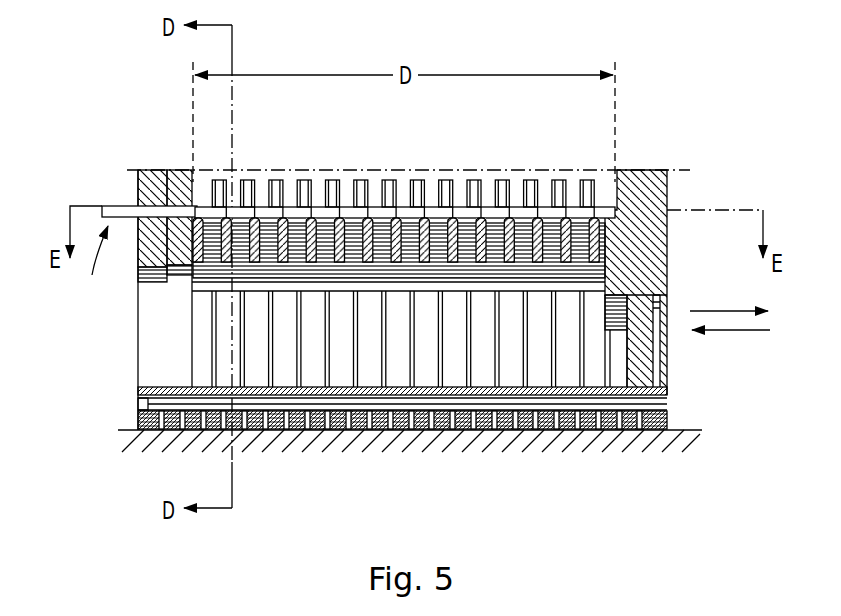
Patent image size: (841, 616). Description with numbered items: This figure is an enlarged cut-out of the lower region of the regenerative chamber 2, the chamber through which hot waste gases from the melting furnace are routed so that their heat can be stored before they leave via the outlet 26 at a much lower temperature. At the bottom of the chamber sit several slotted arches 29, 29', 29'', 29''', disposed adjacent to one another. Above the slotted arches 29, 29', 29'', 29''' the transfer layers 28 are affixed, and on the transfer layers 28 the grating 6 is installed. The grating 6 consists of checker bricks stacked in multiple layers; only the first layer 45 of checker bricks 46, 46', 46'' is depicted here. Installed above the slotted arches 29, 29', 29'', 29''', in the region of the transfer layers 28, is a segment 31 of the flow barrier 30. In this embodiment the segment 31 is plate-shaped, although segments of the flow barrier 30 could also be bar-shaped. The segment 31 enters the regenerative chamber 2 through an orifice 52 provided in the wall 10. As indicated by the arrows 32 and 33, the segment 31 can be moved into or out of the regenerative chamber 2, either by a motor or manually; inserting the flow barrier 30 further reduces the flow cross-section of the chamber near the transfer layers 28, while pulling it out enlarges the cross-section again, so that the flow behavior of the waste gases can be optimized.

The regenerative chamber 2 is at (676, 105).
The grating 6 is at (514, 176).
The wall 10 is at (671, 185).
The outlet 26 is at (138, 357).
The transfer layers 28 is at (354, 217).
The slotted arch 29 is at (175, 188).
The slotted arch 29' is at (216, 192).
The slotted arch 29'' is at (263, 192).
The slotted arch 29''' is at (301, 192).
The flow barrier 30 is at (94, 266).
The segment 31 is at (111, 208).
The arrow 32 is at (723, 310).
The arrow 33 is at (738, 331).
The first layer 45 is at (575, 179).
The checker brick 46 is at (394, 171).
The checker brick 46' is at (426, 171).
The checker brick 46'' is at (458, 171).
The orifice 52 is at (138, 209).